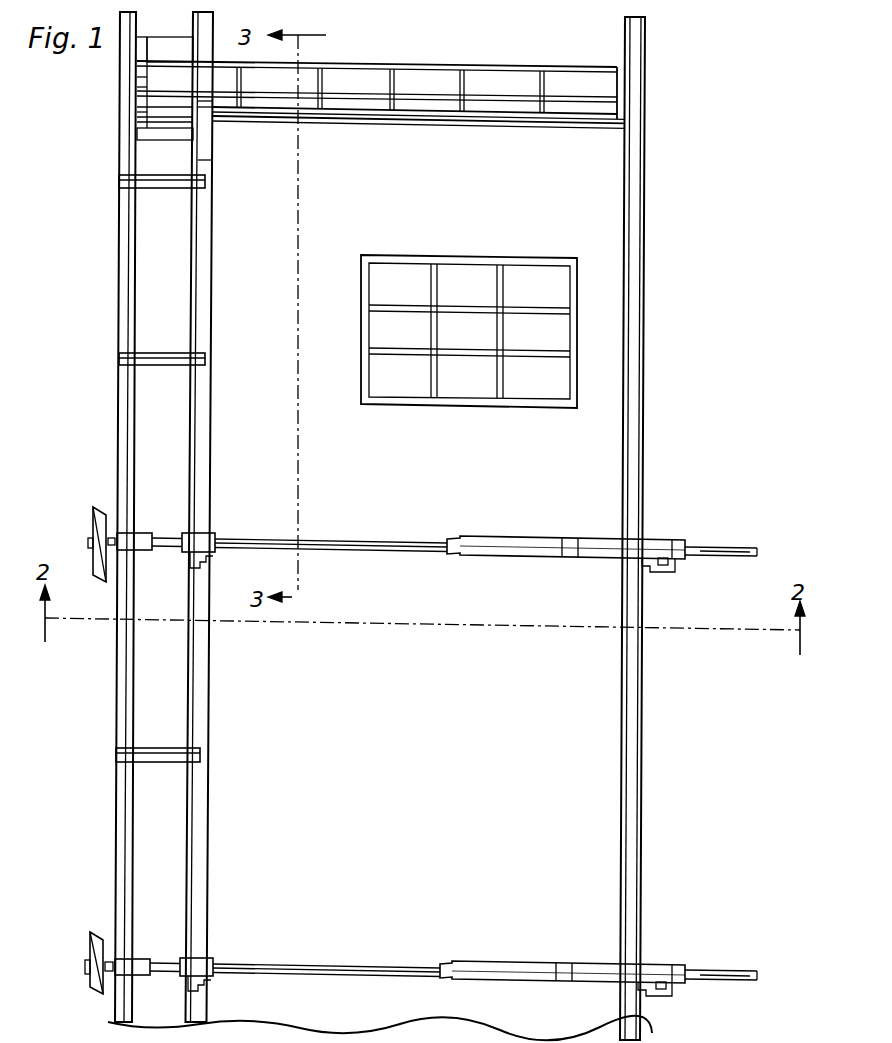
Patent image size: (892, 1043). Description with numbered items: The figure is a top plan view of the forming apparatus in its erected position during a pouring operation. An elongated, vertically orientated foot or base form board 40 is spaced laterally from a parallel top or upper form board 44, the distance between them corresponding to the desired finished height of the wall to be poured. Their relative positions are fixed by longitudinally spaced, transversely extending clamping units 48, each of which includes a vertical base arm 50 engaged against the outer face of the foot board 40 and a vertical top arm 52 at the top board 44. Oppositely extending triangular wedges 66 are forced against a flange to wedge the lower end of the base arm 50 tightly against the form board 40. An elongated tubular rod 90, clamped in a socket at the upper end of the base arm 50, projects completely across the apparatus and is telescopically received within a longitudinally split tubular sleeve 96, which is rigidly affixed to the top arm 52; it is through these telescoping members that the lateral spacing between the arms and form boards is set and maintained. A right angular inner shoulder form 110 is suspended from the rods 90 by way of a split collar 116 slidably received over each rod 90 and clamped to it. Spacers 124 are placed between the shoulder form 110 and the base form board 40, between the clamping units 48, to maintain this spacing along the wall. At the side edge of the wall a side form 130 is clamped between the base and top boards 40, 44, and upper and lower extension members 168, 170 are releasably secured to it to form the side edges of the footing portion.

The foot or base form board 40 is at (132, 246).
The top or upper form board 44 is at (632, 233).
The clamping unit 48 is at (397, 551).
The vertical base arm 50 is at (109, 550).
The vertical top arm 52 is at (672, 570).
The triangular wedges 66 is at (96, 522).
The elongated tubular rod 90 is at (400, 549).
The split tubular sleeve 96 is at (537, 546).
The inner shoulder form or pan 110 is at (200, 704).
The split collar 116 is at (206, 539).
The spacers 124 is at (177, 350).
The side form 130 is at (500, 68).
The upper extension member 168 is at (171, 129).
The lower extension member 170 is at (158, 38).